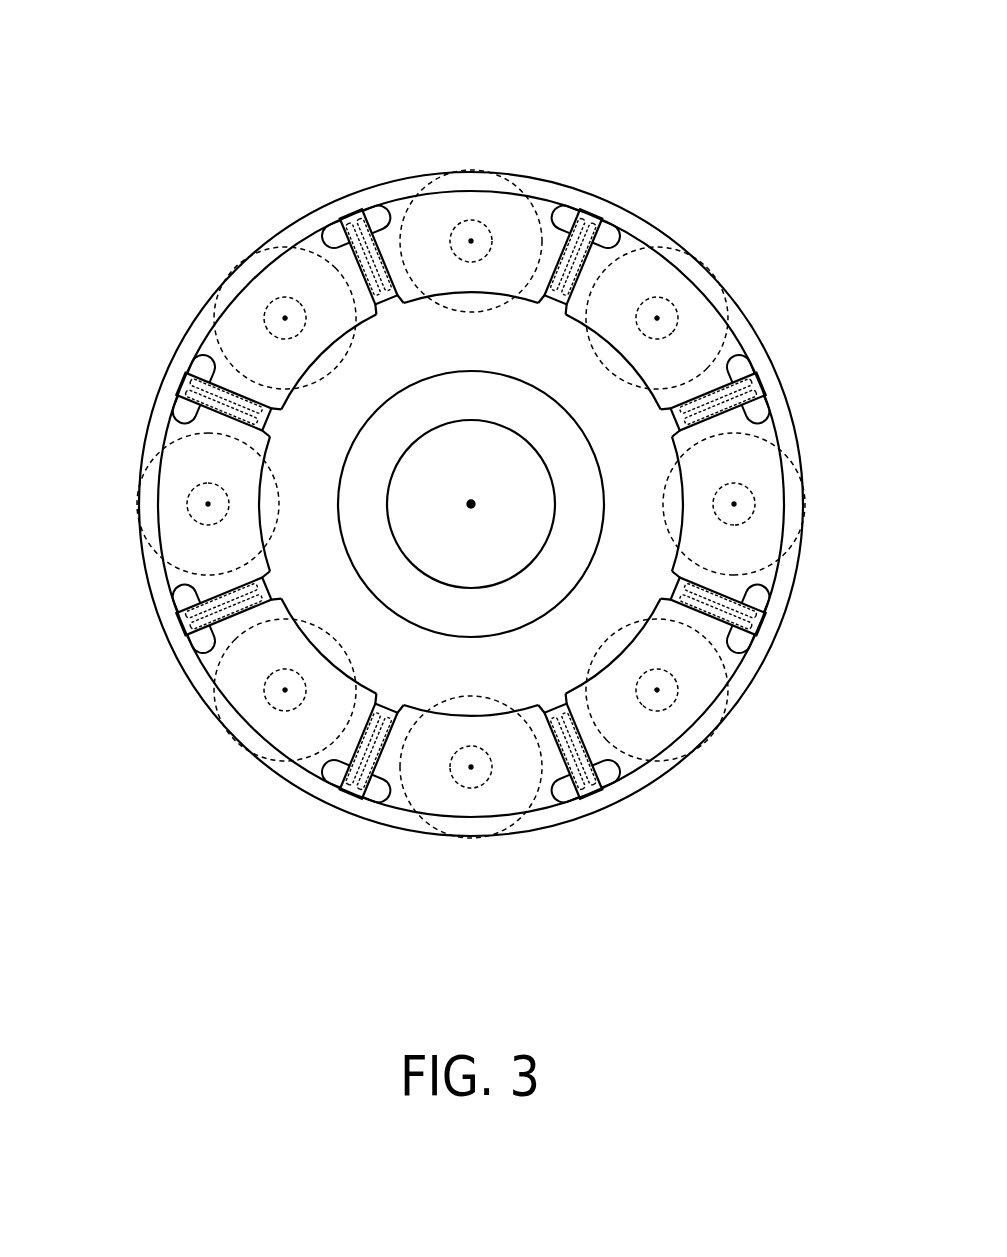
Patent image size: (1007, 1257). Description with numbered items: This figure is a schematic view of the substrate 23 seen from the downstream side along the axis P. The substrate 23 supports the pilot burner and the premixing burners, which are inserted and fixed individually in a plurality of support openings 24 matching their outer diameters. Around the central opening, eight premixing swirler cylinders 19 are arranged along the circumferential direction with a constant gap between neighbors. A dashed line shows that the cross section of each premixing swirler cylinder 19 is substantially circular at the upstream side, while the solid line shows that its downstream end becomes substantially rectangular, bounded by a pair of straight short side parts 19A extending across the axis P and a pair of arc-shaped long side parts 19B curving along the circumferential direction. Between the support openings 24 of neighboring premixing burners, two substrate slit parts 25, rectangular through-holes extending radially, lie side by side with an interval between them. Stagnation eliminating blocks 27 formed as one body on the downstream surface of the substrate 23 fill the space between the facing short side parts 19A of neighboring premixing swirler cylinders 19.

The premixing swirler cylinder 19 is at (466, 168).
The short side part 19A is at (362, 205).
The long side part 19B is at (328, 238).
The substrate 23 is at (620, 103).
The support opening 24 is at (513, 592).
The substrate slit part 25 is at (401, 232).
The stagnation eliminating block 27 is at (358, 222).
The axis P is at (467, 509).